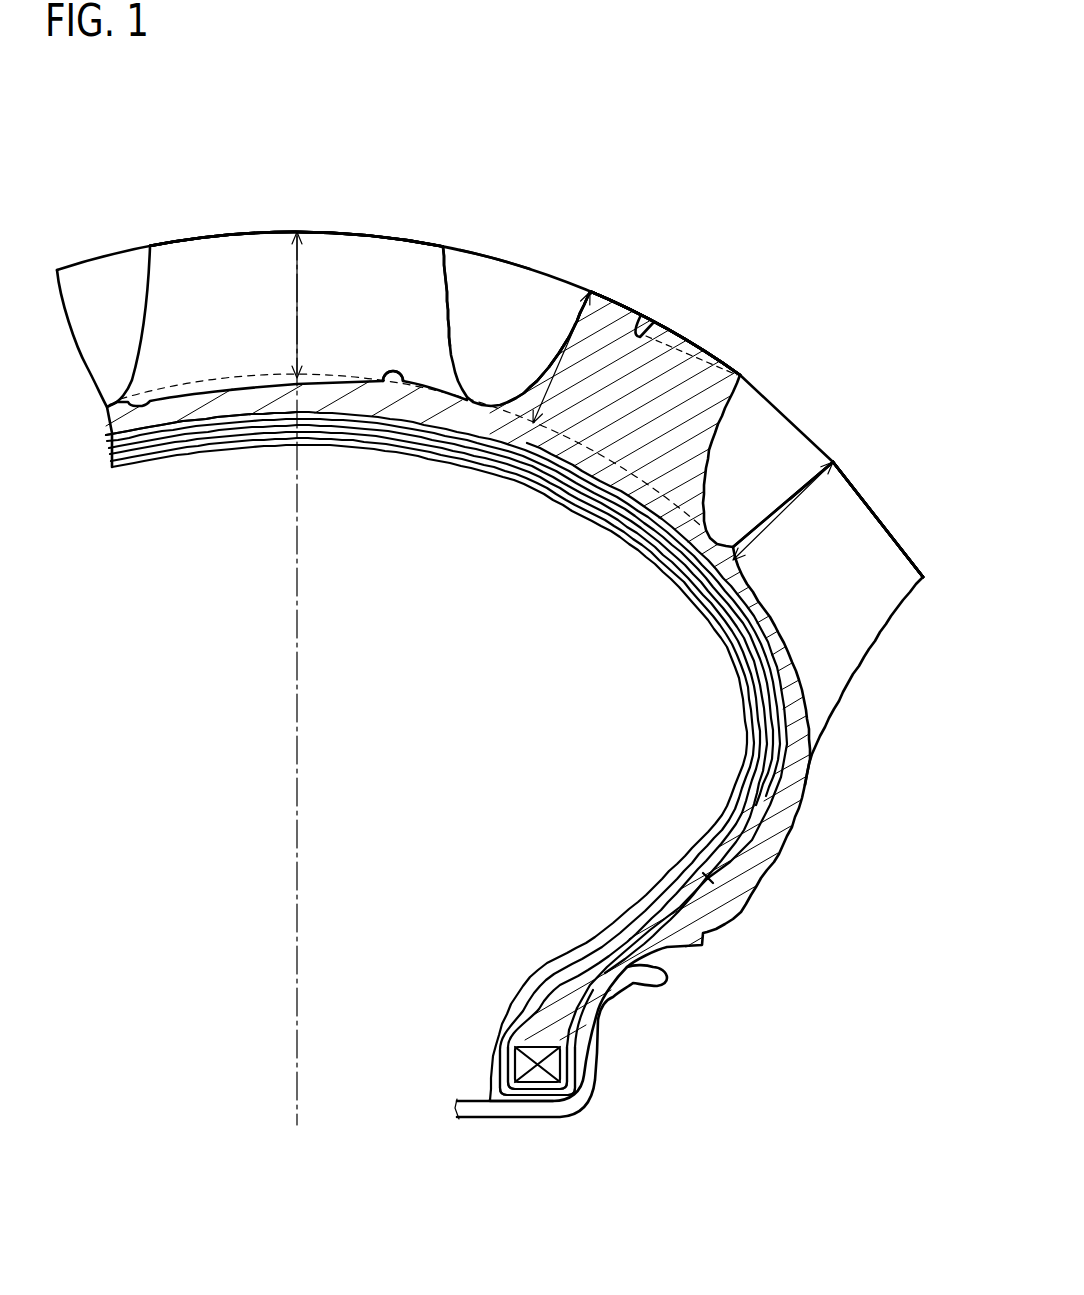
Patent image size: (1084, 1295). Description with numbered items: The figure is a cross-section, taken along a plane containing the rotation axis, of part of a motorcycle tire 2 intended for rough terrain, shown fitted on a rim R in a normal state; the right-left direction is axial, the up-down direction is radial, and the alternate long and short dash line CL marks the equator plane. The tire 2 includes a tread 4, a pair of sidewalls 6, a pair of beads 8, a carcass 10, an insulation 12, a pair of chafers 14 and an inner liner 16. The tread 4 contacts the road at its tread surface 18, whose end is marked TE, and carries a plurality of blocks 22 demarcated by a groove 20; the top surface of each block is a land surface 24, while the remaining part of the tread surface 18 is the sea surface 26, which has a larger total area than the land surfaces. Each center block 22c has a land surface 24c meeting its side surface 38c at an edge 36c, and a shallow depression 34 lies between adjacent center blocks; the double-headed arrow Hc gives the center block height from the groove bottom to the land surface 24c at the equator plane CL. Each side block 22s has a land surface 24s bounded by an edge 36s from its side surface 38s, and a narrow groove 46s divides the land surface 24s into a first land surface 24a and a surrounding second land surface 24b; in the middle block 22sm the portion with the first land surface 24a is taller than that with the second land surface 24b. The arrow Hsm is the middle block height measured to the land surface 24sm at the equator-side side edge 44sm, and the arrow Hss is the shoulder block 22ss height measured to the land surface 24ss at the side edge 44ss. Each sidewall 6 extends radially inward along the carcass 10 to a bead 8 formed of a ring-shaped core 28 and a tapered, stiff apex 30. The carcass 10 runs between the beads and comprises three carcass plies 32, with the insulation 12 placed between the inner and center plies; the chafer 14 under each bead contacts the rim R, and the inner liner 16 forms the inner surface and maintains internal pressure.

The motorcycle tire 2 is at (823, 249).
The tread 4 is at (184, 221).
The sidewall 6 is at (768, 839).
The bead 8 is at (412, 985).
The carcass 10 is at (270, 520).
The insulation 12 is at (330, 433).
The chafer 14 is at (488, 1077).
The inner liner 16 is at (523, 492).
The tread surface 18 is at (370, 233).
The groove 20 is at (143, 295).
The block 22 is at (252, 243).
The center block 22c is at (296, 199).
The side block 22s is at (766, 349).
The middle block 22sm is at (656, 235).
The shoulder block 22ss is at (894, 489).
The land surface 24 is at (316, 236).
The land surface of center block 24c is at (296, 197).
The land surface of side block 24s is at (756, 359).
The land surface of middle block 24sm is at (665, 245).
The land surface of shoulder block 24ss is at (878, 431).
The first land surface 24a is at (705, 337).
The second land surface 24b is at (633, 305).
The sea surface 26 is at (493, 257).
The core 28 is at (518, 1060).
The apex 30 is at (545, 995).
The carcass ply 32 is at (243, 500).
The depression 34 is at (387, 385).
The edge of center block land surface 36c is at (443, 247).
The edge of side block land surface 36s is at (590, 292).
The side surface of center block 38c is at (450, 293).
The side surface of side block 38s is at (547, 370).
The side edge of middle block 44sm is at (573, 283).
The side edge of shoulder block 44ss is at (824, 426).
The narrow groove 46s is at (650, 320).
The rim R is at (576, 1121).
The end of tread surface TE is at (926, 577).
The equator plane CL is at (297, 702).
The height of center block Hc is at (312, 305).
The height of middle block Hsm is at (573, 357).
The height of shoulder block Hss is at (783, 511).